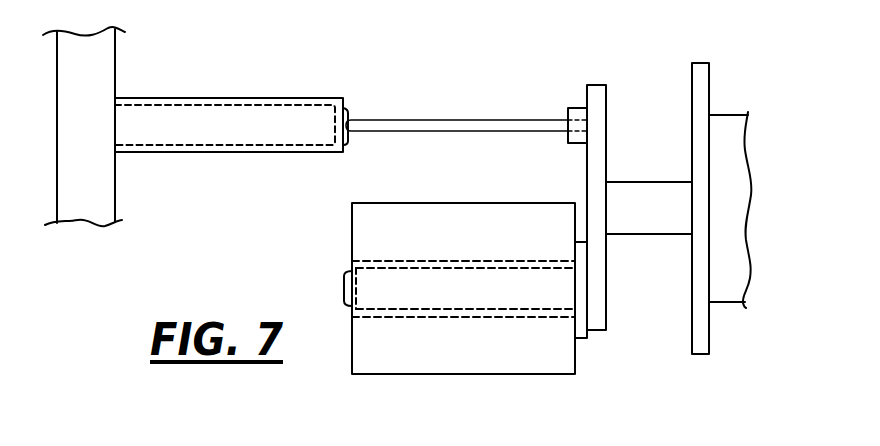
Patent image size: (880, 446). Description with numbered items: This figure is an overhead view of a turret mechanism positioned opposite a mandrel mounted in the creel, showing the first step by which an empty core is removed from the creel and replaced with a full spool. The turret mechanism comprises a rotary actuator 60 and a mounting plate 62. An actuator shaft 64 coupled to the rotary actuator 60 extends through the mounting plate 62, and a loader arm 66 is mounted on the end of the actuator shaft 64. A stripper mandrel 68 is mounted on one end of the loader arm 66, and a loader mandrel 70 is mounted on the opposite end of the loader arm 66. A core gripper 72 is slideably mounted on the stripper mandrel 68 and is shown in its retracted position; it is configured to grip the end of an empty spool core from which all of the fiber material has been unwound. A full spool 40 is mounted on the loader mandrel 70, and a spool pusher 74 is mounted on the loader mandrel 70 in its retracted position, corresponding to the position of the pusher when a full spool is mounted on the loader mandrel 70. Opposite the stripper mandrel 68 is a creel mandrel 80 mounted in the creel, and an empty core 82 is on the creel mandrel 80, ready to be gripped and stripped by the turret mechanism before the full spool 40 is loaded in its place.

The full spool 40 is at (427, 203).
The rotary actuator 60 is at (728, 125).
The mounting plate 62 is at (695, 72).
The actuator shaft 64 is at (650, 190).
The loader arm 66 is at (593, 170).
The stripper mandrel 68 is at (455, 121).
The loader mandrel 70 is at (482, 280).
The core gripper 72 is at (568, 108).
The spool pusher 74 is at (577, 338).
The creel mandrel 80 is at (188, 133).
The empty core 82 is at (226, 97).